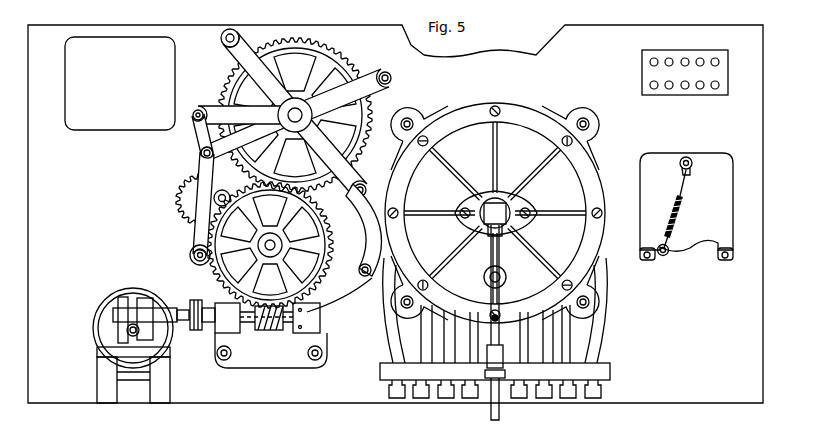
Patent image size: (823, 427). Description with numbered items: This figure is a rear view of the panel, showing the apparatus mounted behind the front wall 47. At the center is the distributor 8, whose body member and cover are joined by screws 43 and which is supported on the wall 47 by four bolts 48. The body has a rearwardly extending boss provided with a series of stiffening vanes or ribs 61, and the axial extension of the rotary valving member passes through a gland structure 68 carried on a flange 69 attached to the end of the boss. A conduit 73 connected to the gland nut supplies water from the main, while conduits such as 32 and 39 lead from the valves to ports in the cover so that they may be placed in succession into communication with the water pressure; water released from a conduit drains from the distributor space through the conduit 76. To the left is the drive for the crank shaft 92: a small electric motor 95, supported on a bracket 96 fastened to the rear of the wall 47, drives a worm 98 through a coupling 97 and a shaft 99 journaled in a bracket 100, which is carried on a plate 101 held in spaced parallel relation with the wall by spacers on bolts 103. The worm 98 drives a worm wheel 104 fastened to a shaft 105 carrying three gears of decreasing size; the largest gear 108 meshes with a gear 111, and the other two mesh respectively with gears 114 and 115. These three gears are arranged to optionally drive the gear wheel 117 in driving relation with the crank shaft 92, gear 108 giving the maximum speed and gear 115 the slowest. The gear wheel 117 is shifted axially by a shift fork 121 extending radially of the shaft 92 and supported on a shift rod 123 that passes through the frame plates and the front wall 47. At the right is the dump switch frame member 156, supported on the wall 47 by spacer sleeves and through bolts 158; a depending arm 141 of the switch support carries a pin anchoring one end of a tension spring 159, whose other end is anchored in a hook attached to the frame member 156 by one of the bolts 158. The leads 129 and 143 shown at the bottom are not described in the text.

The distributor 8 is at (515, 201).
The conduit 32 is at (422, 350).
The conduit 39 is at (448, 355).
The screws 43 is at (498, 107).
The front wall 47 is at (618, 32).
The bolts 48 is at (408, 112).
The stiffening vanes or ribs 61 is at (500, 146).
The gland structure 68 is at (498, 200).
The flange 69 is at (522, 207).
The conduit 73 is at (503, 281).
The conduit 76 is at (490, 412).
The crank shaft 92 is at (295, 115).
The electric motor 95 is at (112, 325).
The bracket 96 is at (97, 394).
The coupling 97 is at (196, 331).
The worm 98 is at (262, 333).
The shaft 99 is at (205, 302).
The bracket 100 is at (276, 367).
The plate 101 is at (195, 247).
The bolts 103 is at (217, 365).
The worm wheel 104 is at (200, 264).
The shaft 105 is at (262, 246).
The gear 108 is at (270, 245).
The gear 111 is at (192, 184).
The gear 114 is at (351, 225).
The gear 115 is at (215, 201).
The gear wheel 117 is at (287, 112).
The shift fork 121 is at (206, 110).
The shift rod 123 is at (192, 121).
The lead 129 is at (692, 426).
The depending arm 141 is at (666, 258).
The lead 143 is at (625, 423).
The frame member 156 is at (727, 180).
The through bolts 158 is at (694, 158).
The tension spring 159 is at (683, 212).